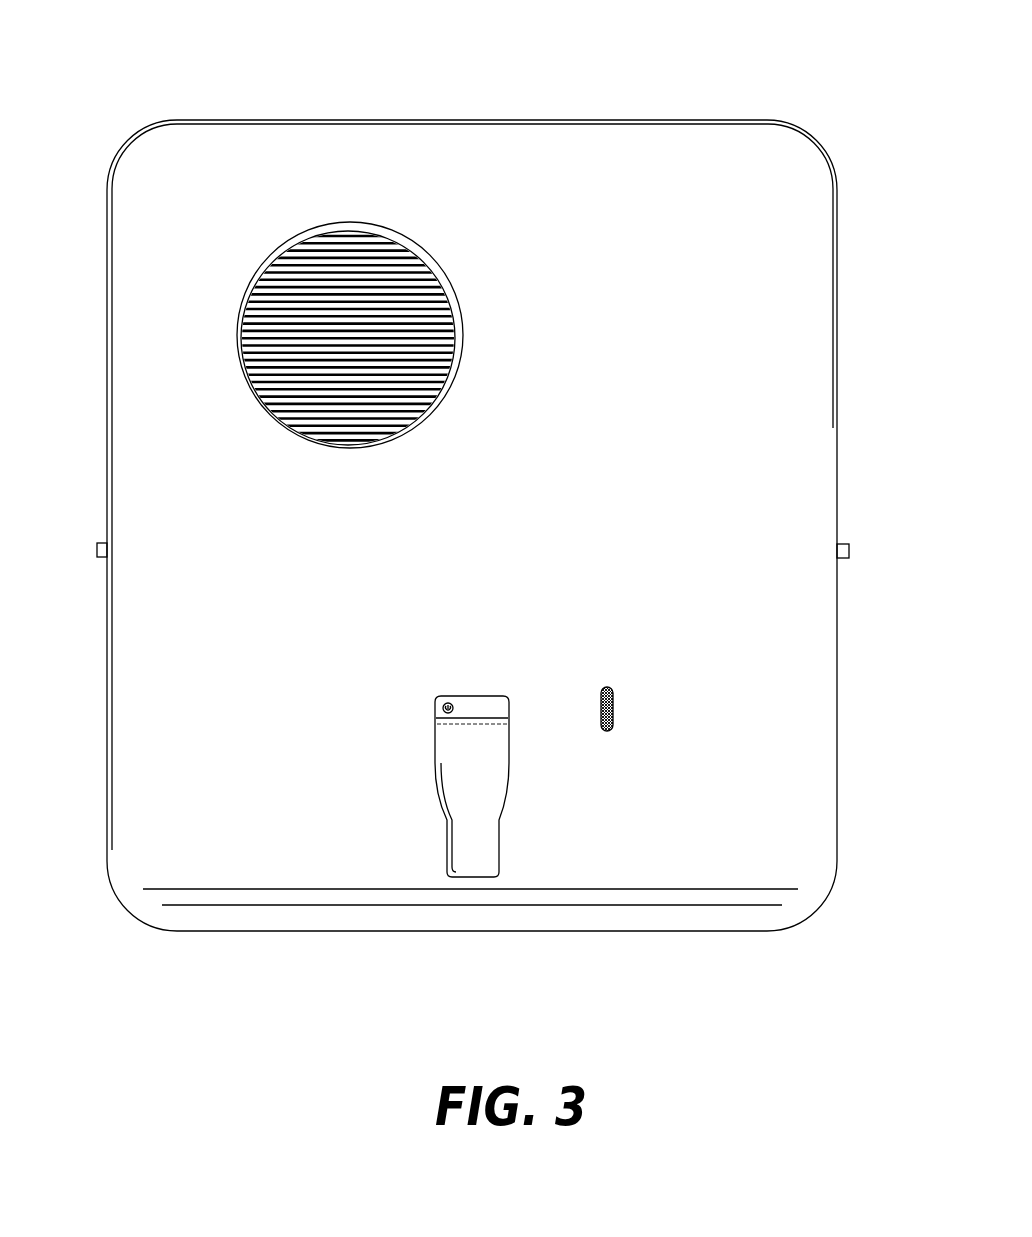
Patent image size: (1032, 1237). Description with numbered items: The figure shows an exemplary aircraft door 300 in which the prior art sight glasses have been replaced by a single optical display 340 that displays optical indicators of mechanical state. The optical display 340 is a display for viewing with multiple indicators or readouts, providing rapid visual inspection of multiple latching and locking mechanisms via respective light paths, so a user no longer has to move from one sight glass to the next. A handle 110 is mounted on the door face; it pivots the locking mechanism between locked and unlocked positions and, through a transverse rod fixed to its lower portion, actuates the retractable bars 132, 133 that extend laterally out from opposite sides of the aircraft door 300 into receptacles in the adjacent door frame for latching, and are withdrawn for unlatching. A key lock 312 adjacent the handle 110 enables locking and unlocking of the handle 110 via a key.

The aircraft door 300 is at (215, 83).
The retractable bar 133 is at (97, 550).
The retractable bar 132 is at (849, 551).
The handle 110 is at (455, 782).
The key lock 312 is at (445, 703).
The optical display 340 is at (613, 710).